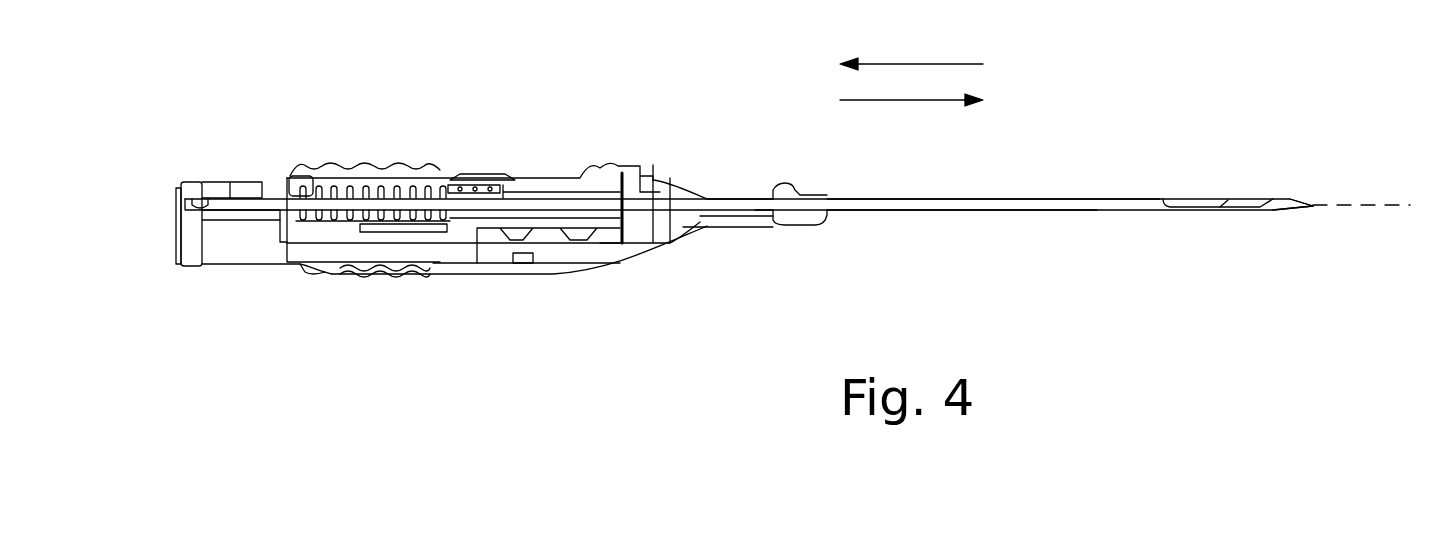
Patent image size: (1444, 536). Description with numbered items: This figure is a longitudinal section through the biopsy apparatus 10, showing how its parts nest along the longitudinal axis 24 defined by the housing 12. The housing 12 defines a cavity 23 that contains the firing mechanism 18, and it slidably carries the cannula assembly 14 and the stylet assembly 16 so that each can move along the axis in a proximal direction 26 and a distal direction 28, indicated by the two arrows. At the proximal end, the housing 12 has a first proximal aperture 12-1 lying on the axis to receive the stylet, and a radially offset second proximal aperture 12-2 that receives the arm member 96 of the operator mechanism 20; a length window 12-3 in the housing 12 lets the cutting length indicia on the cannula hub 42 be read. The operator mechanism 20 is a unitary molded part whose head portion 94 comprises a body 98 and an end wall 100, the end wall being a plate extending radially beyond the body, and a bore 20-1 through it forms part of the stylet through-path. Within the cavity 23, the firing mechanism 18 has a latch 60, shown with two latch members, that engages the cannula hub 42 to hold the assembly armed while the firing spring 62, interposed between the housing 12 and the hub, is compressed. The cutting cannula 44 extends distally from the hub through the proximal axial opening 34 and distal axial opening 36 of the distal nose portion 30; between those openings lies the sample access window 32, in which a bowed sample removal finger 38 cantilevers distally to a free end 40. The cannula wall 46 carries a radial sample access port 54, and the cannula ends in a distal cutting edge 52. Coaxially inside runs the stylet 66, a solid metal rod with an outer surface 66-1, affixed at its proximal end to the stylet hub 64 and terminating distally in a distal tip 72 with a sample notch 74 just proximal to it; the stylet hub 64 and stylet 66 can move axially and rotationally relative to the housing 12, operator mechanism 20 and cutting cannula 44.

The biopsy apparatus 10 is at (110, 108).
The housing 12 is at (377, 283).
The first proximal aperture 12-1 is at (300, 186).
The second proximal aperture 12-2 is at (303, 267).
The length window 12-3 is at (482, 172).
The cannula assembly 14 is at (447, 188).
The stylet assembly 16 is at (150, 216).
The firing mechanism 18 is at (368, 175).
The operator mechanism 20 is at (215, 282).
The bore 20-1 is at (232, 212).
The cavity 23 is at (322, 184).
The longitudinal axis 24 is at (1380, 204).
The proximal direction 26 is at (933, 64).
The distal direction 28 is at (900, 100).
The distal nose portion 30 is at (680, 232).
The sample access window 32 is at (752, 182).
The proximal axial opening 34 is at (683, 227).
The distal axial opening 36 is at (810, 192).
The sample removal finger 38 is at (680, 190).
The free end 40 is at (707, 193).
The cannula hub 42 is at (553, 190).
The cutting cannula 44 is at (1132, 198).
The cannula wall 46 is at (1072, 197).
The distal cutting edge 52 is at (1270, 210).
The sample access port 54 is at (732, 195).
The latch 60 is at (580, 240).
The firing spring 62 is at (410, 225).
The stylet hub 64 is at (170, 265).
The stylet 66 is at (280, 198).
The outer surface 66-1 is at (763, 193).
The distal tip 72 is at (1300, 202).
The sample notch 74 is at (1220, 205).
The head portion 94 is at (228, 270).
The arm member 96 is at (380, 255).
The body 98 is at (227, 197).
The end wall 100 is at (200, 270).